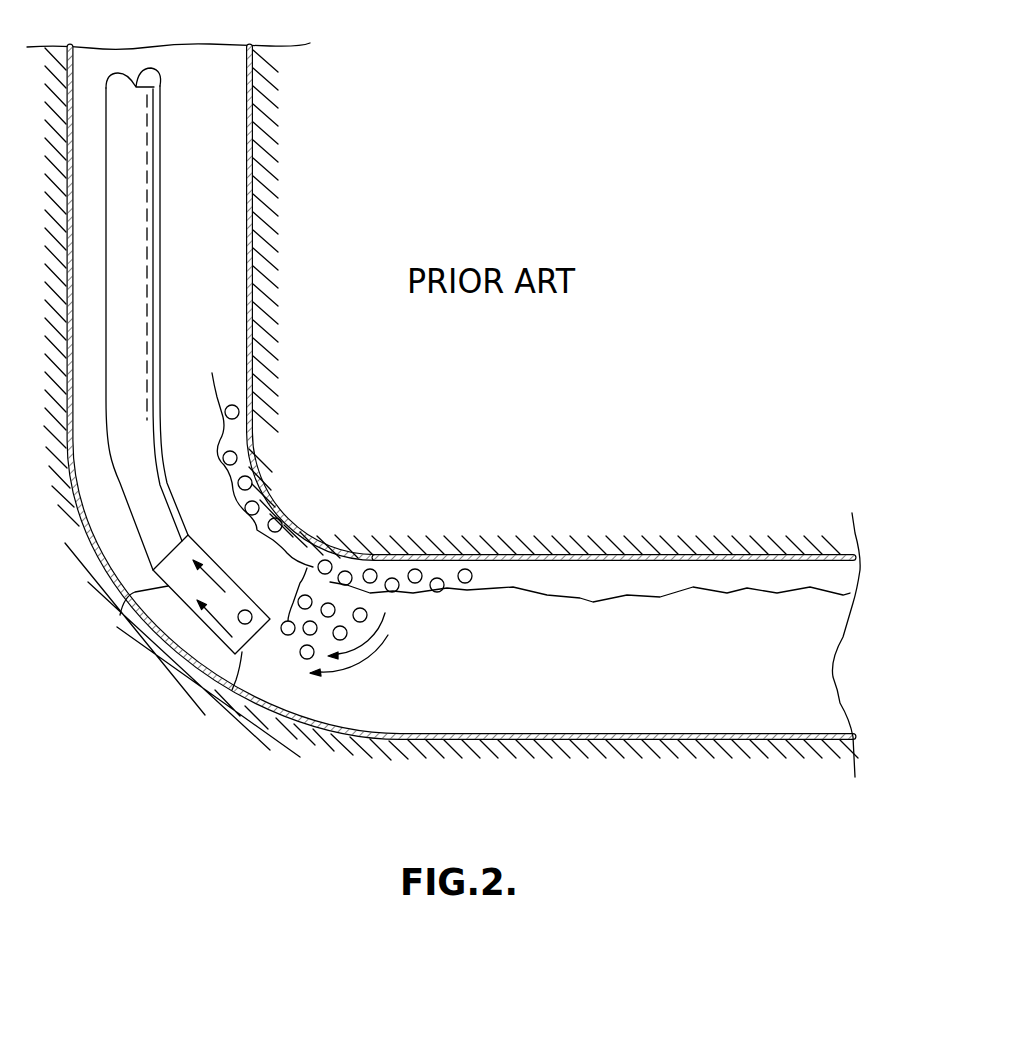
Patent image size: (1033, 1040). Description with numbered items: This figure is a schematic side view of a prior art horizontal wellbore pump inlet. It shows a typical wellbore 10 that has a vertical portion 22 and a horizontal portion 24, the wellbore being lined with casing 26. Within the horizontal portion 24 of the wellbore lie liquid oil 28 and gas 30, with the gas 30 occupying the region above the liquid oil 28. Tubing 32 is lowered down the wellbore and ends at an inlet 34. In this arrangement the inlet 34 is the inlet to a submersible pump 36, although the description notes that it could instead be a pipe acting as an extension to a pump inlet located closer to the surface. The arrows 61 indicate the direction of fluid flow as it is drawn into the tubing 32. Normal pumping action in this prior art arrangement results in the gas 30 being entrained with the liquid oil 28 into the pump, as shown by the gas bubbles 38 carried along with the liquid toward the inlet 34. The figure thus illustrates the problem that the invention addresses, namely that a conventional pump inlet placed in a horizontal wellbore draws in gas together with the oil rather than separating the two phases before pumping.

The wellbore 10 is at (253, 130).
The vertical portion 22 is at (253, 205).
The horizontal portion 24 is at (567, 553).
The casing 26 is at (253, 313).
The liquid oil 28 is at (698, 718).
The gas 30 is at (703, 578).
The tubing 32 is at (162, 357).
The inlet 34 is at (232, 690).
The submersible pump 36 is at (120, 615).
The gas bubbles 38 is at (323, 555).
The arrows 61 is at (211, 594).